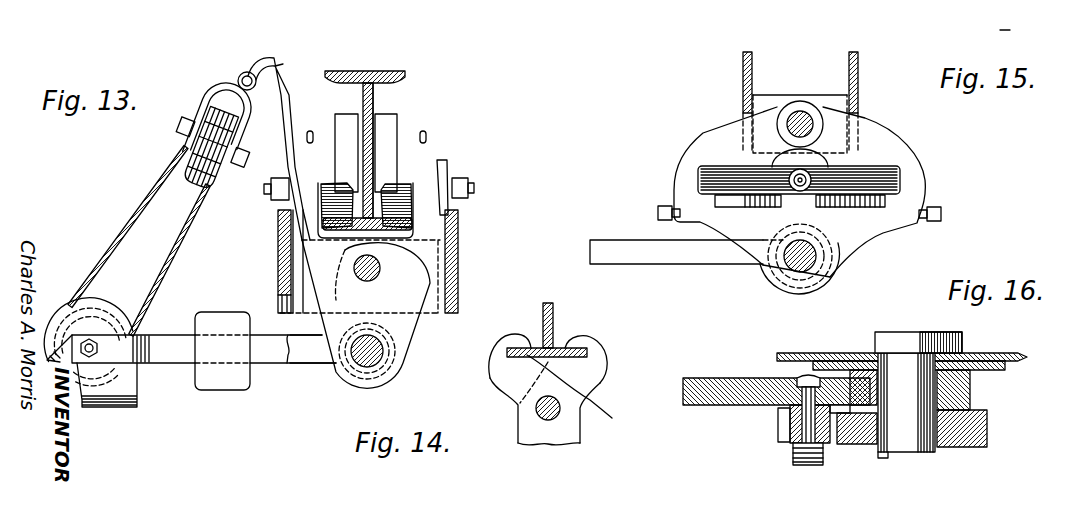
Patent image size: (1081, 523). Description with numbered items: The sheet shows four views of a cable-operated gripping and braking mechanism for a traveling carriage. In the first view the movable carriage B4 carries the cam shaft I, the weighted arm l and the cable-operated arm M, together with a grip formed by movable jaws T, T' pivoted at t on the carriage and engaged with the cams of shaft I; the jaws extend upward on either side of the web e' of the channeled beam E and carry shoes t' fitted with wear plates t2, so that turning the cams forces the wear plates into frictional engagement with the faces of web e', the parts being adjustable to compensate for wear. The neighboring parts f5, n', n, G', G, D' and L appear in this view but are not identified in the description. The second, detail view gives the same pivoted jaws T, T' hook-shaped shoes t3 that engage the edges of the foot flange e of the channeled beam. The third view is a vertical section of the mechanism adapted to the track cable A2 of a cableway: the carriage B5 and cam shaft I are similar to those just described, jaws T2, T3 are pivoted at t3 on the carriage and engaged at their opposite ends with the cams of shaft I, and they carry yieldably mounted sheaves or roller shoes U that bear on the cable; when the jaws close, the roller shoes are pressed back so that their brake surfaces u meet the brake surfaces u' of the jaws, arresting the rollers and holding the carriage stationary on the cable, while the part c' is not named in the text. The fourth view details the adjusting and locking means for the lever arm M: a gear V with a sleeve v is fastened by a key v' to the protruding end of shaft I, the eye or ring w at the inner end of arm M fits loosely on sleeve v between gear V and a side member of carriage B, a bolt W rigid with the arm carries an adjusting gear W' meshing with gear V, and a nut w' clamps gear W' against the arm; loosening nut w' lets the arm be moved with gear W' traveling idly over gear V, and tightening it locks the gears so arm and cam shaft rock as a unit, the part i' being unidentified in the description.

In FIG. 13, the pulley hanger arm f5 is at (285, 85).
In FIG. 13, the beam E is at (372, 72).
In FIG. 14, the beam E is at (553, 306).
In FIG. 13, the web e' is at (401, 149).
In FIG. 13, the wear plates t2 is at (398, 132).
In FIG. 13, the shoes t' is at (408, 113).
In FIG. 13, the left roller G' is at (303, 188).
In FIG. 13, the right roller G is at (429, 179).
In FIG. 13, the movable jaw T is at (392, 285).
In FIG. 14, the movable jaw T is at (525, 408).
In FIG. 13, the jaw pivot t is at (387, 263).
In FIG. 14, the jaw pivot t is at (575, 420).
In FIG. 13, the cam shaft I is at (363, 358).
In FIG. 15, the cam shaft I is at (806, 262).
In FIG. 16, the cam shaft I is at (905, 445).
In FIG. 13, the movable jaw T' is at (258, 245).
In FIG. 14, the movable jaw T' is at (573, 388).
In FIG. 13, the movable carriage B4 is at (458, 234).
In FIG. 13, the pulley housing n' is at (191, 122).
In FIG. 13, the pulley n is at (211, 162).
In FIG. 13, the belt D' is at (139, 241).
In FIG. 13, the cable operated arm M is at (172, 353).
In FIG. 16, the cable operated arm M is at (720, 392).
In FIG. 13, the block L is at (236, 380).
In FIG. 13, the weighted arm l is at (313, 345).
In FIG. 14, the hook-shaped shoes t3 is at (514, 337).
In FIG. 15, the hook-shaped shoes t3 is at (800, 118).
In FIG. 14, the foot flange e is at (577, 386).
In FIG. 15, the wire end c' is at (1009, 17).
In FIG. 15, the carriage B5 is at (858, 82).
In FIG. 15, the jaw T3 is at (707, 140).
In FIG. 15, the jaw T2 is at (890, 142).
In FIG. 15, the sheave or roller shoe U is at (700, 172).
In FIG. 15, the brake surfaces of the jaws u' is at (804, 189).
In FIG. 15, the brake surfaces u is at (799, 225).
In FIG. 15, the cable A2 is at (823, 220).
In FIG. 16, the carriage B is at (1012, 355).
In FIG. 16, the gear V is at (860, 445).
In FIG. 16, the bolt W is at (772, 389).
In FIG. 16, the adjusting gear W' is at (785, 430).
In FIG. 16, the nut w' is at (785, 461).
In FIG. 16, the collar i' is at (935, 328).
In FIG. 16, the sleeve v is at (975, 390).
In FIG. 16, the eye or ring w is at (991, 420).
In FIG. 16, the key v' is at (889, 470).